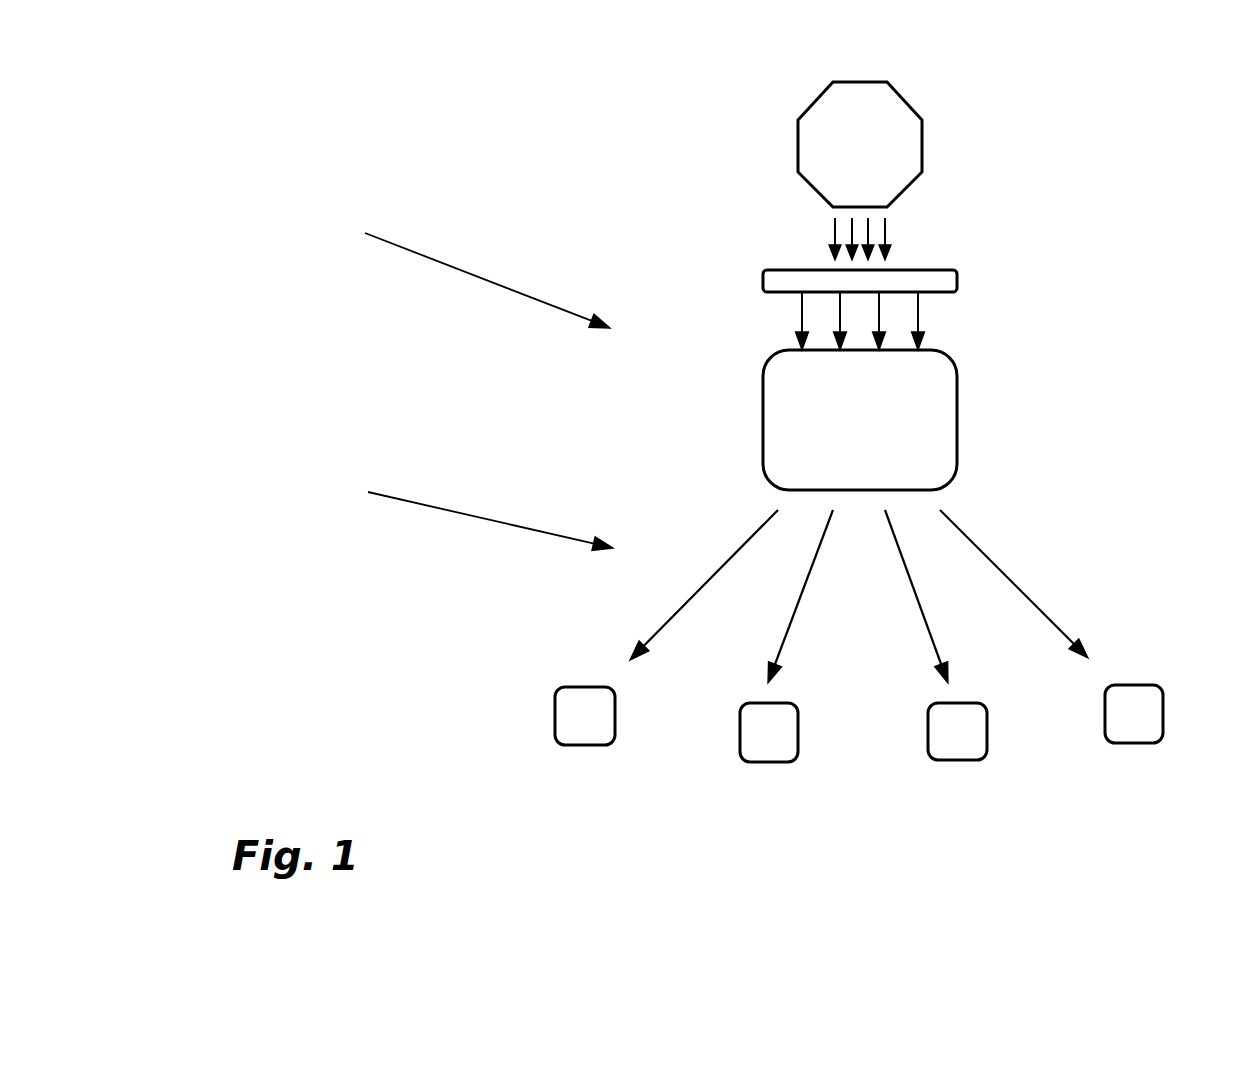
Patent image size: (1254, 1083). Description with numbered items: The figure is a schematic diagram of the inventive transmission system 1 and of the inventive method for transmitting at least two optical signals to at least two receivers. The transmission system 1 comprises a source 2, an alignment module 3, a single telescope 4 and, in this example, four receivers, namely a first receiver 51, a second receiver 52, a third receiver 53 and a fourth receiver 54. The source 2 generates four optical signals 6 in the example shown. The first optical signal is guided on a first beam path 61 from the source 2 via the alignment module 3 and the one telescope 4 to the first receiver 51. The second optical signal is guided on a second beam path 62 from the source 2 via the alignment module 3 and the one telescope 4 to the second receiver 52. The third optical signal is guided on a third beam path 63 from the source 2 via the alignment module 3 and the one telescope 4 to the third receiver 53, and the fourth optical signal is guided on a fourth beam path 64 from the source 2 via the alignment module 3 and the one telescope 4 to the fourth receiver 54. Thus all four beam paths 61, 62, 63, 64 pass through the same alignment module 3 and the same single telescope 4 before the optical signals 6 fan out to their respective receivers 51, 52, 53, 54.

The transmission system 1 is at (469, 266).
The source 2 is at (822, 118).
The alignment module 3 is at (945, 281).
The telescope 4 is at (935, 440).
The optical signals 6 is at (479, 509).
The first receiver 51 is at (567, 722).
The second receiver 52 is at (777, 740).
The third receiver 53 is at (968, 745).
The fourth receiver 54 is at (1133, 722).
The first beam path 61 is at (835, 238).
The second beam path 62 is at (852, 232).
The third beam path 63 is at (868, 232).
The fourth beam path 64 is at (885, 237).